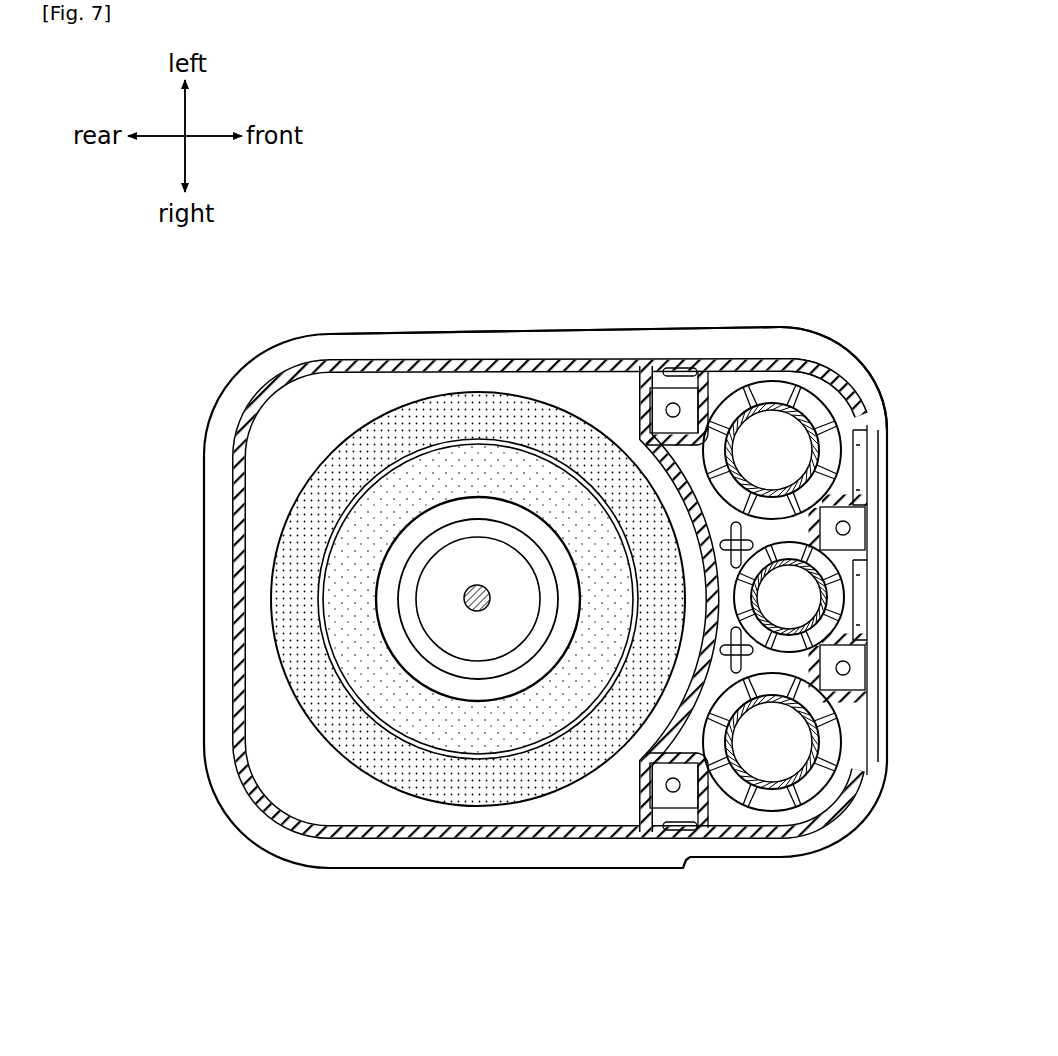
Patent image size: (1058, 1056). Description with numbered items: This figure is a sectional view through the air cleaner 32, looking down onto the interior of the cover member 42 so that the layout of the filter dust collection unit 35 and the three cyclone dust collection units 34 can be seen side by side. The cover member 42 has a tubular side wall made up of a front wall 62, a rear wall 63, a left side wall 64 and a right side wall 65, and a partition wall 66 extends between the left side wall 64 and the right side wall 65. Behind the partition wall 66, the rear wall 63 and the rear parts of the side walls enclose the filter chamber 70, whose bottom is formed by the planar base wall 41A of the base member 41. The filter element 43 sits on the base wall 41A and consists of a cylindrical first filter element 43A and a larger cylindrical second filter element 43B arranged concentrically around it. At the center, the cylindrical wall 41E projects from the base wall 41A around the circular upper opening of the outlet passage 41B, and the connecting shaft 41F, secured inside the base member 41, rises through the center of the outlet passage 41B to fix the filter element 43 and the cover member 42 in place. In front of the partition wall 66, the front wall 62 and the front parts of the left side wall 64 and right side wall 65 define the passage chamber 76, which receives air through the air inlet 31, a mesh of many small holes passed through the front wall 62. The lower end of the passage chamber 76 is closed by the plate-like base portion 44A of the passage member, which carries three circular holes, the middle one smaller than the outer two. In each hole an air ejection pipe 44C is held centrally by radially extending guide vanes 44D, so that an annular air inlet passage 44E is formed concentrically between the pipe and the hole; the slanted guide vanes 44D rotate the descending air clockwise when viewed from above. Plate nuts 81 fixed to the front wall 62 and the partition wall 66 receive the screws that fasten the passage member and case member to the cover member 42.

The air cleaner 32 is at (276, 322).
The cyclone dust collection unit 34 is at (814, 324).
The cover member 42 is at (427, 324).
The filter dust collection unit 35 is at (349, 422).
The rear wall 63 is at (236, 655).
The left side wall 64 is at (580, 366).
The right side wall 65 is at (495, 840).
The partition wall 66 is at (668, 712).
The front wall 62 is at (845, 393).
The air inlet 31 is at (858, 471).
The passage chamber 76 is at (856, 523).
The plate nut 81 is at (672, 808).
The base portion 44A is at (719, 380).
The air ejection pipe 44C is at (792, 822).
The guide vane 44D is at (818, 788).
The air inlet passage 44E is at (820, 746).
The filter element 43 is at (381, 599).
The first filter element 43A is at (357, 517).
The second filter element 43B is at (330, 472).
The base member 41 is at (356, 840).
The base wall 41A is at (300, 803).
The outlet passage 41B is at (445, 647).
The cylindrical wall 41E is at (422, 562).
The connecting shaft 41F is at (487, 598).
The filter chamber 70 is at (312, 777).